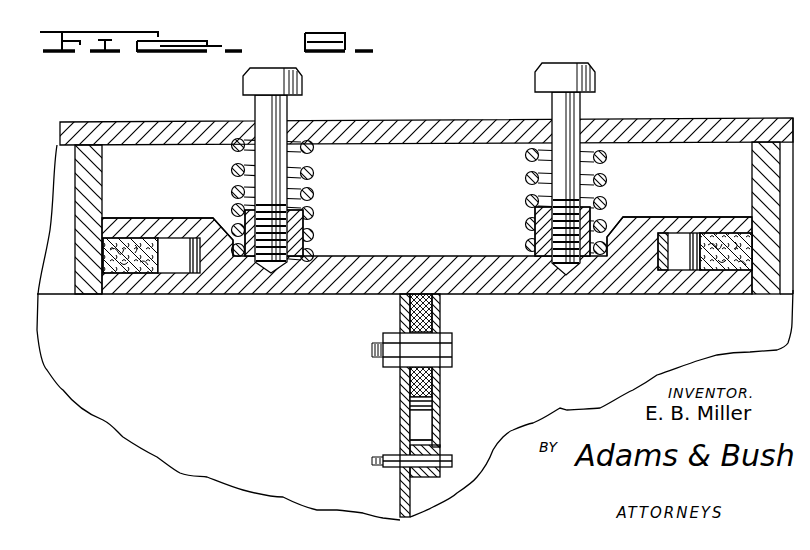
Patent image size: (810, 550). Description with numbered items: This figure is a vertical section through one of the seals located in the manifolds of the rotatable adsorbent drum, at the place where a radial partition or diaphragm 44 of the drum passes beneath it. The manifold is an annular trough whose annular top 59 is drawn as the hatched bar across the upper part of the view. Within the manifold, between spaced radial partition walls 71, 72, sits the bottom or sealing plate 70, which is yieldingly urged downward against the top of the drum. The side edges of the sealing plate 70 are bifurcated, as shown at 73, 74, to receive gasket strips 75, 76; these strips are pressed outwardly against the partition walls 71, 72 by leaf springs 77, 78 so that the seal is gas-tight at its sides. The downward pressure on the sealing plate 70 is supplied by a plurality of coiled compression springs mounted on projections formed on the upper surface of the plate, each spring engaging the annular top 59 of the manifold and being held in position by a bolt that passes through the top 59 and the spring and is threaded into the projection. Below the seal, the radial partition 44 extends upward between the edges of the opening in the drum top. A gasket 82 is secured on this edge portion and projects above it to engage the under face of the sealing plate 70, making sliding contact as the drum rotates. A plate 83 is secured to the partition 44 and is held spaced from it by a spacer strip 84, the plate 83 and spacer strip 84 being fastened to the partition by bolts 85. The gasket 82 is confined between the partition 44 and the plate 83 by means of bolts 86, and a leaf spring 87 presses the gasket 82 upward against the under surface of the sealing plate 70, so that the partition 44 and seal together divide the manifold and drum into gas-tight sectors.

The radial partition or diaphragm 44 is at (400, 492).
The annular top of manifold 59 is at (396, 121).
The bottom or sealing plate 70 is at (292, 296).
The radial partition wall 71 is at (101, 196).
The radial partition wall 72 is at (757, 172).
The bifurcated side edge 73 is at (137, 219).
The bifurcated side edge 74 is at (716, 216).
The gasket strip 75 is at (131, 295).
The gasket strip 76 is at (727, 270).
The leaf spring 77 is at (183, 295).
The leaf spring 78 is at (673, 270).
The gasket 82 is at (441, 316).
The plate 83 is at (441, 432).
The spacer strip 84 is at (441, 447).
The bolt 85 is at (442, 467).
The bolt 86 is at (452, 353).
The leaf spring 87 is at (432, 407).